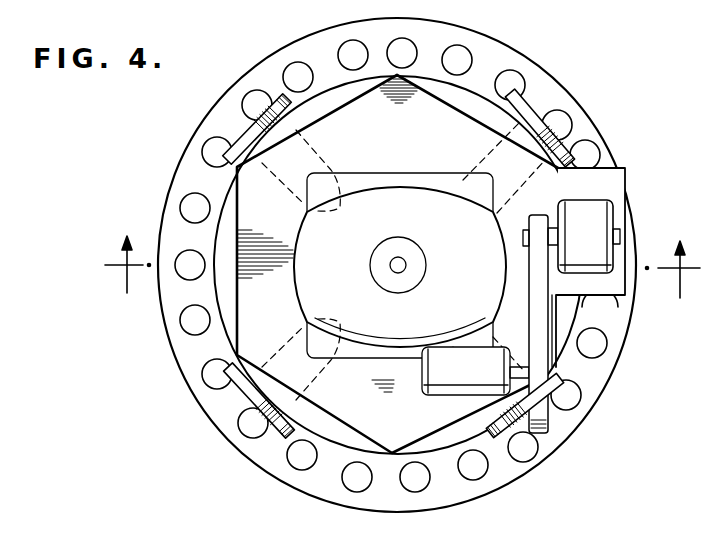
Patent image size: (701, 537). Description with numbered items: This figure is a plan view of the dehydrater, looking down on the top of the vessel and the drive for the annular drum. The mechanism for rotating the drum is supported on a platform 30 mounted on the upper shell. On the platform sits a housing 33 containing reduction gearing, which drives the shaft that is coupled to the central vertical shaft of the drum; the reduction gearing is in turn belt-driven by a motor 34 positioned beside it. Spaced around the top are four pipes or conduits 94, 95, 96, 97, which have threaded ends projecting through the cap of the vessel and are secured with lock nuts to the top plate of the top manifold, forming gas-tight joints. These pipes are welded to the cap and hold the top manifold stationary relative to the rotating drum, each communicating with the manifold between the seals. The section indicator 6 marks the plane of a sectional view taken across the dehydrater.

The platform 30 is at (410, 136).
The housing 33 is at (430, 325).
The motor 34 is at (598, 220).
The pipe 94 is at (250, 402).
The pipe 95 is at (253, 128).
The pipe 96 is at (518, 107).
The pipe 97 is at (493, 443).
The section line 6- 6 is at (402, 267).